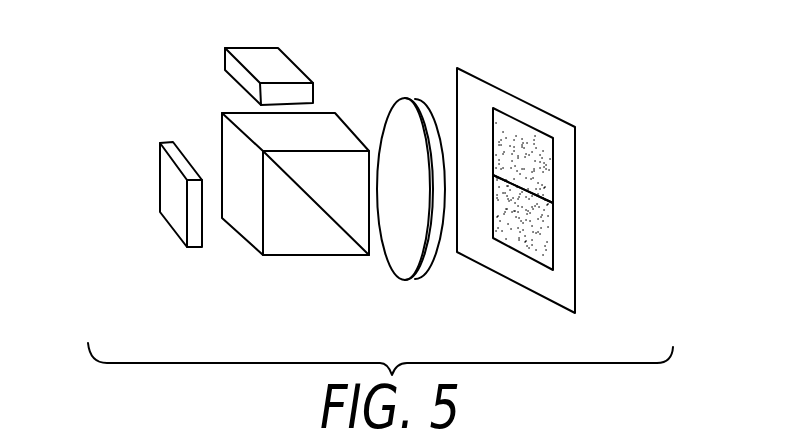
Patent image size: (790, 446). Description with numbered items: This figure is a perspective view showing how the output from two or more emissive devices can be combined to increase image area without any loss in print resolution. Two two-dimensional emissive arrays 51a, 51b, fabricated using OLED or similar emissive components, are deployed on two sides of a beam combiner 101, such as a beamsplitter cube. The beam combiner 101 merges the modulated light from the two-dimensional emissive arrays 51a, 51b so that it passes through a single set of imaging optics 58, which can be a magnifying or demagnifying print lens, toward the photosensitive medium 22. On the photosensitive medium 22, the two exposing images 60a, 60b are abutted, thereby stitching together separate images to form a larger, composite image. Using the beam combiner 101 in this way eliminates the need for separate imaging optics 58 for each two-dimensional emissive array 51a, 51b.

The two-dimensional emissive array 51a is at (223, 53).
The two-dimensional emissive array 51b is at (160, 195).
The beam combiner 101 is at (287, 255).
The imaging optics 58 is at (410, 97).
The photosensitive medium 22 is at (575, 185).
The exposing image 60a is at (525, 132).
The exposing image 60b is at (550, 232).